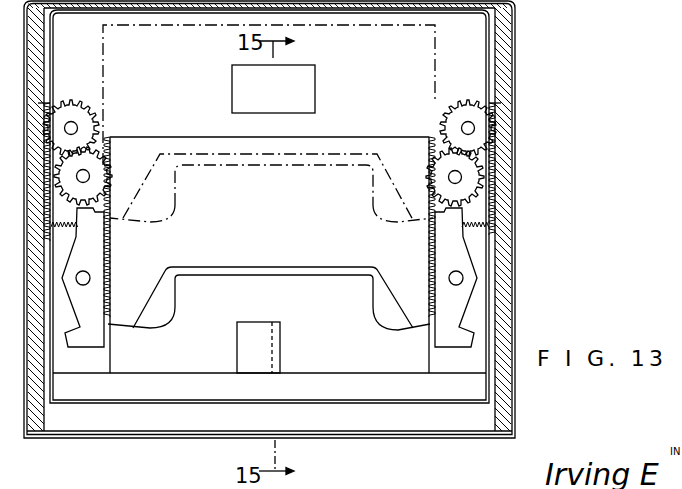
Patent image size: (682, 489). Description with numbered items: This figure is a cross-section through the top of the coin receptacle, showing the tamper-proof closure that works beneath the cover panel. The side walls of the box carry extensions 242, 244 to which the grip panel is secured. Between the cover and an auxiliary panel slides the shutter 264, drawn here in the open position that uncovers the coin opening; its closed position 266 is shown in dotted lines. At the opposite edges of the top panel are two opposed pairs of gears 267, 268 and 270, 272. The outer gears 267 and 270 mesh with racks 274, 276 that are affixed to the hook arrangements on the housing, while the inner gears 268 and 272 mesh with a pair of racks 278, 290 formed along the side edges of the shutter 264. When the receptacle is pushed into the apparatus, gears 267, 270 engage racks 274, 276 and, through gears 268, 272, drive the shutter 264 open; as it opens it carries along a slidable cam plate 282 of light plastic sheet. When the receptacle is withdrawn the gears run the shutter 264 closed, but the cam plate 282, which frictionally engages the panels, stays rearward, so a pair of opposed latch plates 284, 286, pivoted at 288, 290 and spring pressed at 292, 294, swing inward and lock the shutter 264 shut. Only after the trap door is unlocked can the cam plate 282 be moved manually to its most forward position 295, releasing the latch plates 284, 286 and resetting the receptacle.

The extension of side panel 242 is at (53, 390).
The extension of side panel 244 is at (486, 390).
The slidable shutter 264 is at (363, 221).
The closed position of shutter 266 is at (105, 72).
The gear 267 is at (77, 122).
The gear 268 is at (97, 176).
The gear 270 is at (483, 130).
The gear 272 is at (468, 178).
The rack 274 is at (50, 103).
The rack 276 is at (498, 107).
The rack 278 is at (112, 205).
The rack / pivot 290 is at (432, 151).
The slidable cam plate 282 is at (244, 309).
The latch plate 284 is at (92, 313).
The latch plate 286 is at (460, 307).
The pivot 288 is at (91, 278).
The spring 292 is at (72, 228).
The spring 294 is at (490, 237).
The forward position of cam plate 295 is at (247, 167).